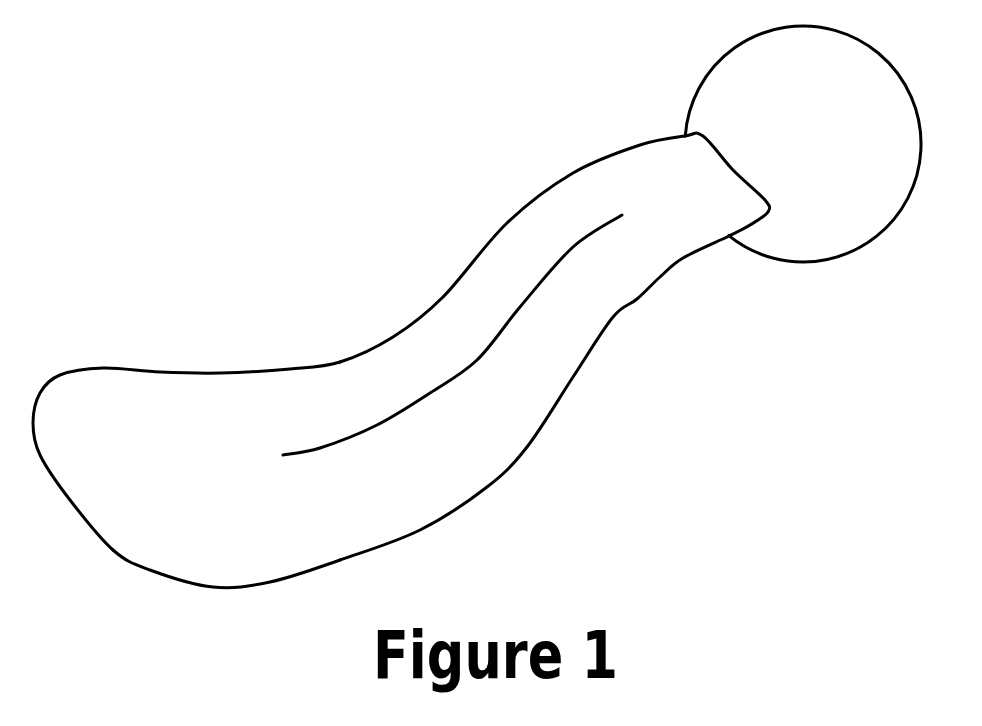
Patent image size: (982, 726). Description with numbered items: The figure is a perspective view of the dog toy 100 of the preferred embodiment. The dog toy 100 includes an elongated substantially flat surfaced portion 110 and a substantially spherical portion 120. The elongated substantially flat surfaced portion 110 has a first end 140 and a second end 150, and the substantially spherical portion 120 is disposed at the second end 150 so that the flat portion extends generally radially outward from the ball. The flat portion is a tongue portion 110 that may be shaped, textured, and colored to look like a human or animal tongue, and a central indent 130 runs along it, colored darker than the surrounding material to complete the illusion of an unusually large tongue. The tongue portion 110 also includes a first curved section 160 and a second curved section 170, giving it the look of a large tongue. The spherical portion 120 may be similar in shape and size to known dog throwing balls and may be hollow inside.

The dog toy 100 is at (474, 307).
The elongated substantially flat surfaced portion 110 is at (186, 456).
The substantially spherical portion 120 is at (803, 144).
The central indent 130 is at (475, 362).
The first end 140 is at (107, 547).
The second end 150 is at (735, 170).
The first curved section 160 is at (443, 297).
The second curved section 170 is at (665, 277).